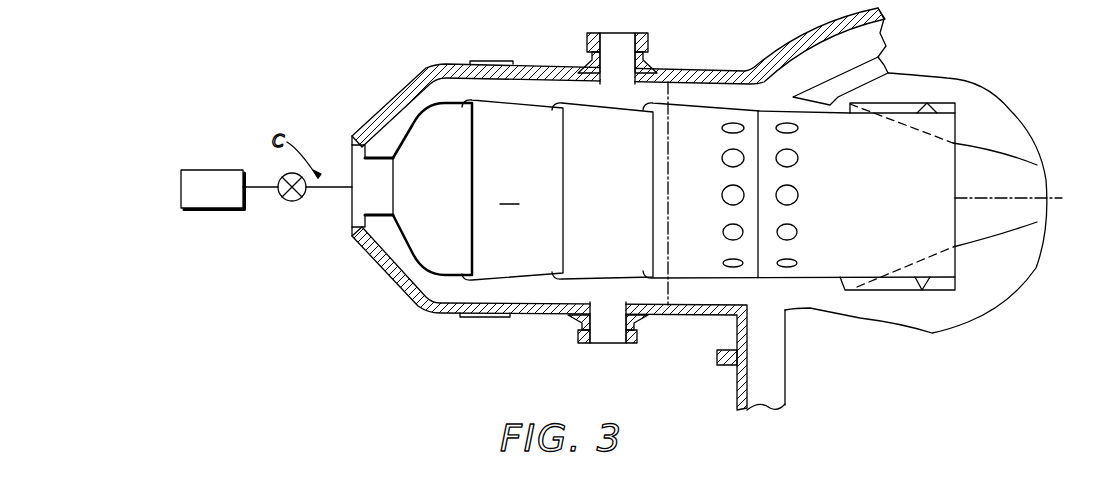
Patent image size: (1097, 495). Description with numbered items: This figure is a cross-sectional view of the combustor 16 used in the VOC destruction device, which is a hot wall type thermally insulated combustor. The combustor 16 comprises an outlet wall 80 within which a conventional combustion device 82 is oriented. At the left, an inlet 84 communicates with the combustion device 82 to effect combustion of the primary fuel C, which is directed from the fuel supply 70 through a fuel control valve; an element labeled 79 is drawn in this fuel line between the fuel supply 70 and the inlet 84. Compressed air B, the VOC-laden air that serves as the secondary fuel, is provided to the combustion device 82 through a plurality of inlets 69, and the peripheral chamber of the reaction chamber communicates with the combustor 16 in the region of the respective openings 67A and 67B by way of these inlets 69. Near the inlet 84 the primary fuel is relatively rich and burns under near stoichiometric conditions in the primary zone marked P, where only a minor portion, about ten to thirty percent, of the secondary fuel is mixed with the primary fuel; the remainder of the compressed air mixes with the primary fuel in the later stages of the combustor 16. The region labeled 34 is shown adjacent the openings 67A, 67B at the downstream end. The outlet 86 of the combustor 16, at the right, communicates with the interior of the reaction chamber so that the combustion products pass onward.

The combustor 16 is at (421, 314).
The turbine 34 is at (846, 63).
The opening 67A is at (778, 73).
The opening 67B is at (768, 300).
The inlets 69 is at (726, 195).
The fuel supply 70 is at (225, 212).
The control valve 79 is at (298, 201).
The outlet wall 80 is at (511, 313).
The combustion device 82 is at (527, 124).
The inlet 84 is at (346, 185).
The outlet 86 is at (990, 168).